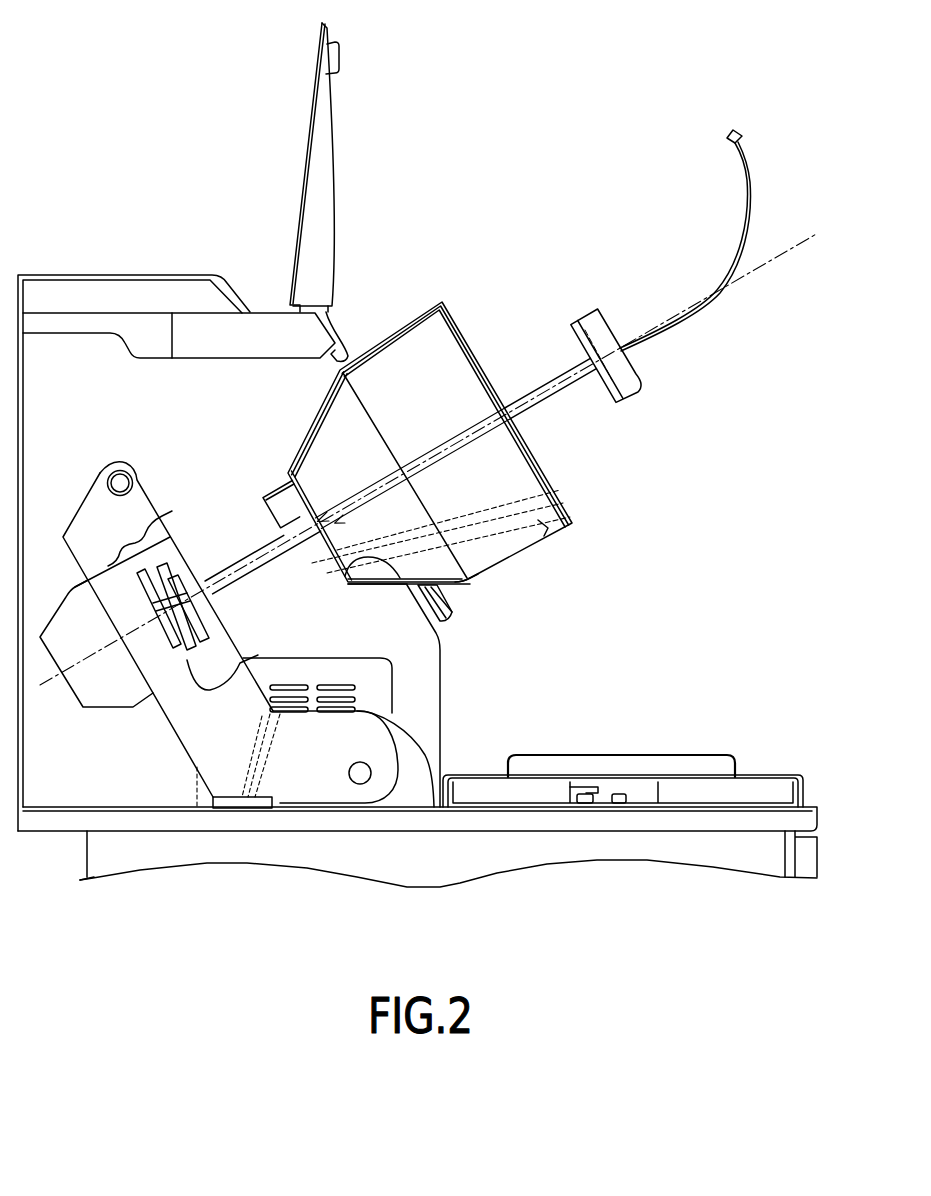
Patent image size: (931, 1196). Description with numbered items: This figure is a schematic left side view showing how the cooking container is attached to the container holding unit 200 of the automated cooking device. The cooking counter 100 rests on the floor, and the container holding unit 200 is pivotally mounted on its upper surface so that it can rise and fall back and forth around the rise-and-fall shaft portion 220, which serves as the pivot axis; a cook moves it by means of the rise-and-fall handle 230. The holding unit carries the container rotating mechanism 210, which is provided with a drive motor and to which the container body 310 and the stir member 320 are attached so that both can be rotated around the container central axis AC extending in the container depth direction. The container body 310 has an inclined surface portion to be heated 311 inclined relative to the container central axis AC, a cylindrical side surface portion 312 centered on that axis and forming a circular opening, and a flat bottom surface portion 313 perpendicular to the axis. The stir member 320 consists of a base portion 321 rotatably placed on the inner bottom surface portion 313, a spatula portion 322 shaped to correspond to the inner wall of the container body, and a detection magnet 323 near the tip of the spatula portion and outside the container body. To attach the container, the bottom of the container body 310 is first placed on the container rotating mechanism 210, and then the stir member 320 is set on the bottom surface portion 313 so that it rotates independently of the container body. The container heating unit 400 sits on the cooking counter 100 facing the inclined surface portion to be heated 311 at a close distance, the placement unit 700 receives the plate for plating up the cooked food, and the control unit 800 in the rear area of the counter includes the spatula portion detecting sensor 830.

The cooking counter 100 is at (809, 800).
The container holding unit 200 is at (180, 746).
The container rotating mechanism 210 is at (107, 690).
The rise-and-fall shaft portion 220 is at (361, 786).
The rise-and-fall handle 230 is at (117, 474).
The container body 310 is at (428, 338).
The inclined surface portion to be heated 311 is at (473, 578).
The side surface portion 312 is at (547, 531).
The bottom surface portion 313 is at (444, 611).
The stir member 320 is at (674, 329).
The base portion 321 is at (630, 396).
The spatula portion 322 is at (752, 202).
The detection magnet 323 is at (742, 136).
The container heating unit 400 is at (396, 682).
The placement unit 700 is at (759, 767).
The control unit 800 is at (95, 275).
The spatula portion detecting sensor 830 is at (340, 354).
The container central axis AC is at (44, 688).